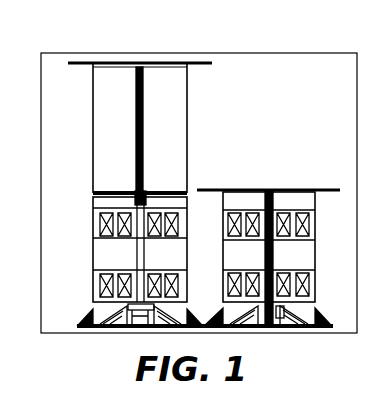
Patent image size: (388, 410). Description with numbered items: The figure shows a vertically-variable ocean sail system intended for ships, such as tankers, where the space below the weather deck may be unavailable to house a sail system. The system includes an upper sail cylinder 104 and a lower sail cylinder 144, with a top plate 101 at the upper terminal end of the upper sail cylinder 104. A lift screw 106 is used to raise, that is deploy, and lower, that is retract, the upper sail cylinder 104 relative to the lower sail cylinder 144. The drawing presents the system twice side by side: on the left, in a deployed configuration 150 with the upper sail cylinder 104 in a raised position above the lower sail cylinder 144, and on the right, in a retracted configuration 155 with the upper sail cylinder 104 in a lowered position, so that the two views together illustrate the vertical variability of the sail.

The top plate 101 is at (116, 62).
The upper sail cylinder 104 is at (188, 105).
The lift screw 106 is at (147, 123).
The lower sail cylinder 144 is at (91, 266).
The deployed configuration 150 is at (218, 40).
The retracted configuration 155 is at (295, 107).